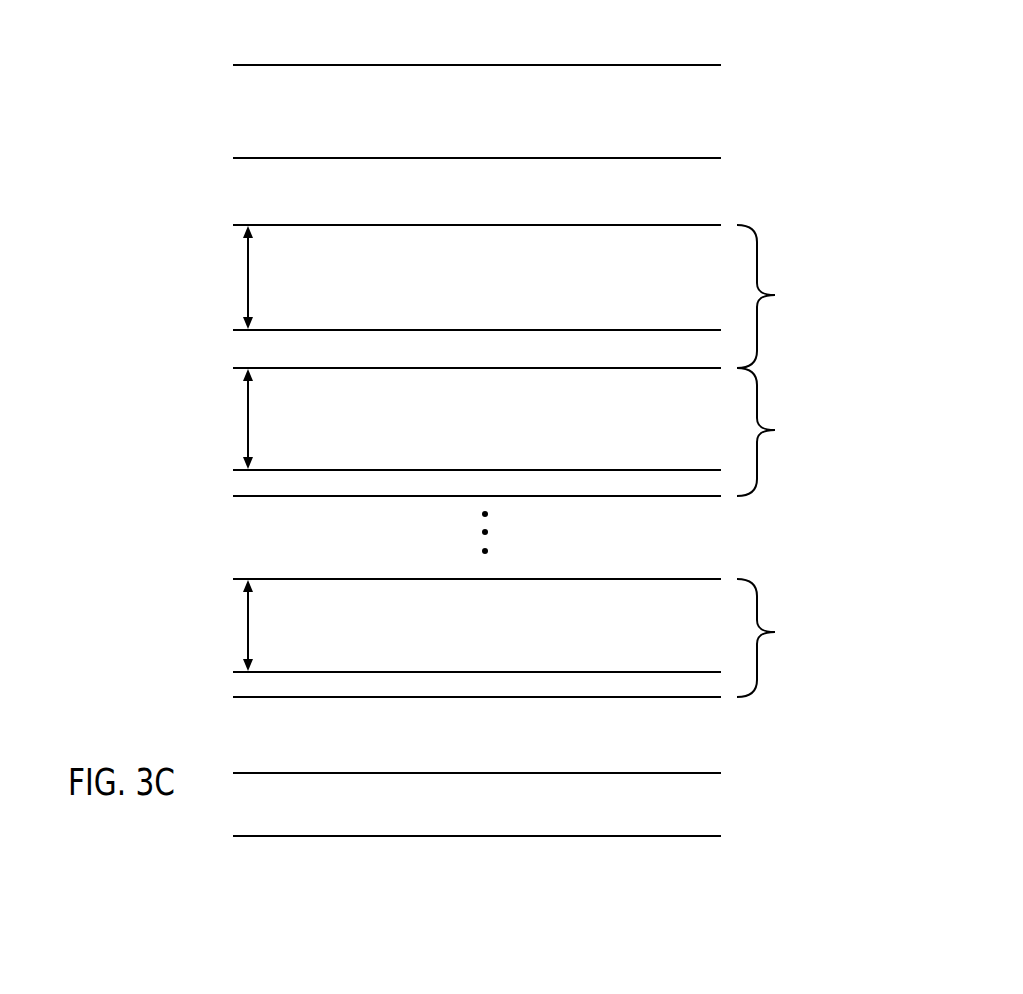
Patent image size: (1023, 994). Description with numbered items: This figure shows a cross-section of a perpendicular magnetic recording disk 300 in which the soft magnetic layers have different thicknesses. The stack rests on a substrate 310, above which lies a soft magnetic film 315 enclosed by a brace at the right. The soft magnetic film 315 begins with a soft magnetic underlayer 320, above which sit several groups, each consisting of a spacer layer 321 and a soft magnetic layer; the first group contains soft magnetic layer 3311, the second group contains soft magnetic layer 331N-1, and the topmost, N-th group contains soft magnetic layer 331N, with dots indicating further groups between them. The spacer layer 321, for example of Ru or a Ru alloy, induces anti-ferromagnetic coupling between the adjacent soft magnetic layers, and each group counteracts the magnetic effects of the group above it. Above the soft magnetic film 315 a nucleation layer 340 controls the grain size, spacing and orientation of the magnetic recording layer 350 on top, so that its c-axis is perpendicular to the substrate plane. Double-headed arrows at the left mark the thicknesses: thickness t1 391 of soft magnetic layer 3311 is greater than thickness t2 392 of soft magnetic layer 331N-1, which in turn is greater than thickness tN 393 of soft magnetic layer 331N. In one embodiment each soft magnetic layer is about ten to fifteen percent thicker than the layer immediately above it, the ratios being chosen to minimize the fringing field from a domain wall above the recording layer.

The perpendicular magnetic recording disk 300 is at (801, 90).
The substrate 310 is at (712, 816).
The soft magnetic film 315 is at (851, 773).
The soft magnetic underlayer 320 is at (712, 742).
The spacer layer 321 is at (362, 692).
The soft magnetic layer 331N is at (369, 281).
The soft magnetic layer 331N-1 is at (373, 435).
The soft magnetic layer 3311 is at (367, 634).
The nucleation layer 340 is at (362, 208).
The magnetic recording layer 350 is at (362, 123).
The thickness t1 391 is at (248, 620).
The thickness t2 392 is at (248, 421).
The thickness tN 393 is at (248, 280).